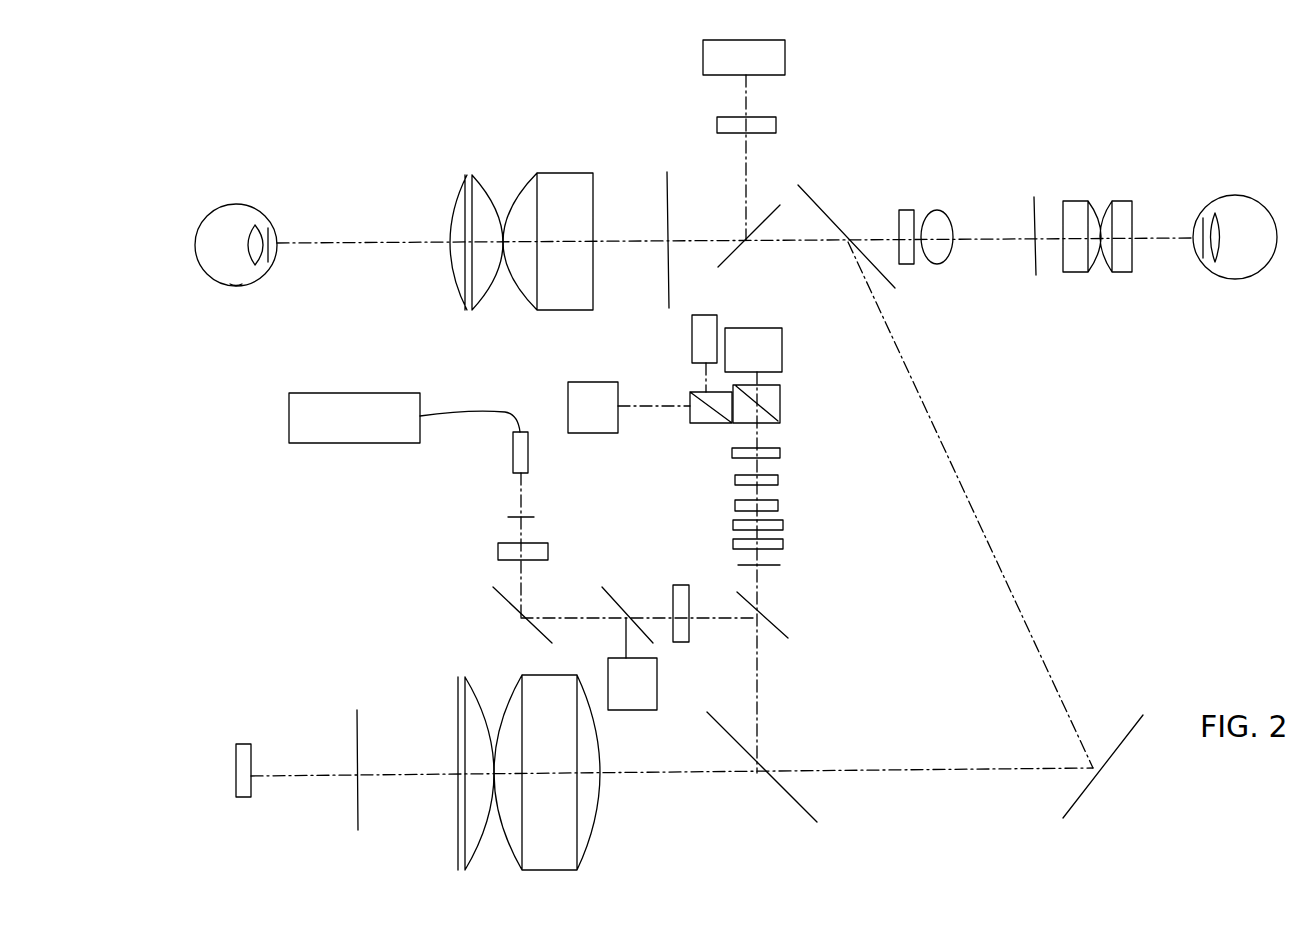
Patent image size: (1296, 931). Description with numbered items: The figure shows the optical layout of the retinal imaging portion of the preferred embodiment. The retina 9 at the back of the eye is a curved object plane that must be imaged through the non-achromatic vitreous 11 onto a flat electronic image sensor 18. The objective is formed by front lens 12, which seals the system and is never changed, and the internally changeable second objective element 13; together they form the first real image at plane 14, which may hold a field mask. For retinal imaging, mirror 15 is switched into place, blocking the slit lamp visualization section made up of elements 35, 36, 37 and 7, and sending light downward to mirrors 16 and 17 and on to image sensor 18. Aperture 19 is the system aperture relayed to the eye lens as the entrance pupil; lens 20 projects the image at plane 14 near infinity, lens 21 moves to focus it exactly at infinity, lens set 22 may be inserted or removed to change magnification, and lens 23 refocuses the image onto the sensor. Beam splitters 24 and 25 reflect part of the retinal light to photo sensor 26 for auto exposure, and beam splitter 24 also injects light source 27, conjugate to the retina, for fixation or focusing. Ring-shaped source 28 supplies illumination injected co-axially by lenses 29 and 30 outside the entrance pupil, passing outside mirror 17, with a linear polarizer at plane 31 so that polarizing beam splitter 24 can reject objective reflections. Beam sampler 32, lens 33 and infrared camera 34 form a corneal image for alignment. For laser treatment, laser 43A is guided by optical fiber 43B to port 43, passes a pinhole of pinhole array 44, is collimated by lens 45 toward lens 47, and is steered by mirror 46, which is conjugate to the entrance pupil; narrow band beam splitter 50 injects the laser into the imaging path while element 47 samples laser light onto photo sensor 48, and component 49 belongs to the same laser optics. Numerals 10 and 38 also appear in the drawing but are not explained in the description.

The visualization section element 7 is at (1132, 282).
The retina 9 is at (203, 218).
The cornea 10 is at (272, 230).
The vitreous 11 is at (228, 273).
The front lens 12 is at (458, 287).
The second objective element 13 is at (562, 172).
The plane 14 is at (669, 286).
The mirror 15 is at (828, 205).
The mirror 16 is at (1115, 752).
The mirror 17 is at (788, 795).
The image sensor 18 is at (780, 338).
The aperture 19 is at (778, 564).
The lens 20 is at (783, 542).
The lens 21 is at (783, 520).
The lens set 22 is at (729, 476).
The lens 23 is at (732, 453).
The polarizing beam splitter 24 is at (780, 416).
The beam splitter 25 is at (708, 408).
The photo sensor 26 is at (692, 338).
The light source 27 is at (567, 400).
The source 28 is at (241, 740).
The lens 29 is at (457, 732).
The lens 30 is at (523, 673).
The plane 31 is at (353, 820).
The beam sampler 32 is at (775, 208).
The lens 33 is at (716, 124).
The infrared camera 34 is at (785, 64).
The visualization section element 35 is at (908, 210).
The visualization section element 36 is at (950, 217).
The visualization section element 37 is at (1038, 205).
The observer eye 38 is at (1249, 270).
The port 43 is at (512, 455).
The laser 43A is at (340, 393).
The optical fiber 43B is at (468, 408).
The pinhole array 44 is at (505, 516).
The lens 45 is at (498, 552).
The mirror 46 is at (553, 622).
The lens 47 is at (615, 597).
The photo sensor 48 is at (657, 684).
The optical component 49 is at (683, 585).
The narrow band optical beam splitter 50 is at (785, 632).